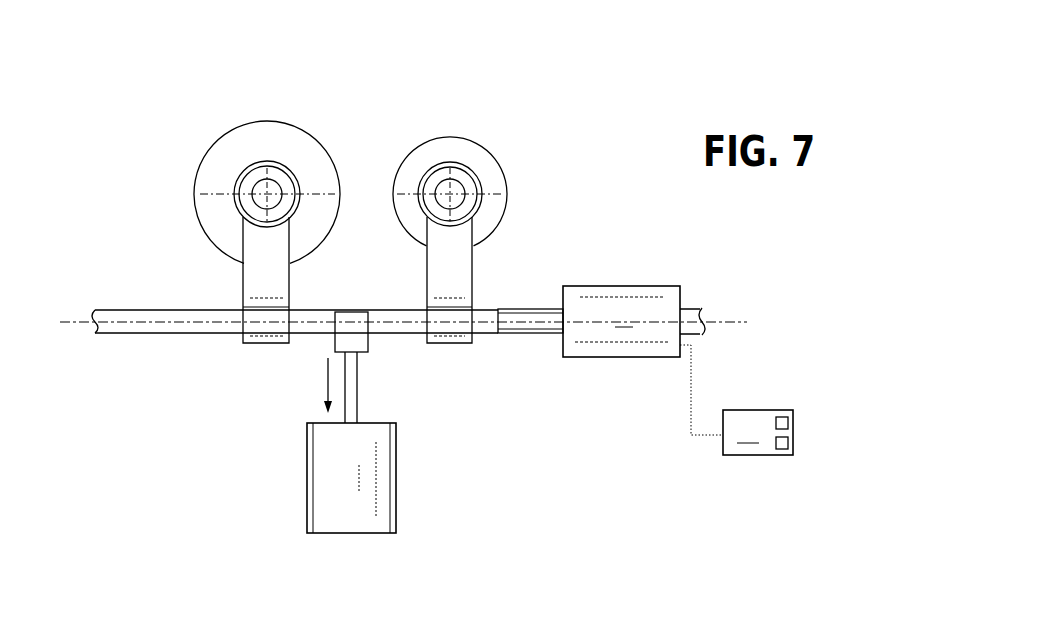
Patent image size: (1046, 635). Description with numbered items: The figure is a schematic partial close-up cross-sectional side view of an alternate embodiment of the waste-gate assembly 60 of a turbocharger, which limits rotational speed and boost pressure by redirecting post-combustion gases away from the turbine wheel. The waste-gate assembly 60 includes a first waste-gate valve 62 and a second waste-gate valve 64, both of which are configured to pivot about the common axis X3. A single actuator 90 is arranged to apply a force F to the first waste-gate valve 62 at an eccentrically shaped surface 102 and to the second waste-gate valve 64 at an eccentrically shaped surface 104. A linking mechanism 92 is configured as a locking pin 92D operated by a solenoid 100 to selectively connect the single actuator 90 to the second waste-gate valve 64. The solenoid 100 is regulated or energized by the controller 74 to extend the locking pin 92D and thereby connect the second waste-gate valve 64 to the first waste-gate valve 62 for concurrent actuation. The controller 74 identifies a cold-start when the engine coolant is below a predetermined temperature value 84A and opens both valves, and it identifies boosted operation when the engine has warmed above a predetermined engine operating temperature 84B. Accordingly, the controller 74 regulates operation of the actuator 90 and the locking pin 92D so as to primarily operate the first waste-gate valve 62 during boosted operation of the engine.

The waste-gate assembly 60 is at (394, 85).
The first waste-gate valve 62 is at (312, 157).
The second waste-gate valve 64 is at (488, 170).
The linking mechanism 92 is at (517, 256).
The locking pin 92D is at (535, 335).
The solenoid 100 is at (680, 337).
The common axis X3 is at (710, 320).
The eccentrically shaped surface 102 is at (252, 345).
The eccentrically shaped surface 104 is at (443, 345).
The single actuator 90 is at (307, 492).
The controller 74 is at (773, 400).
The predetermined temperature value 84A is at (790, 445).
The predetermined engine operating temperature 84B is at (790, 423).